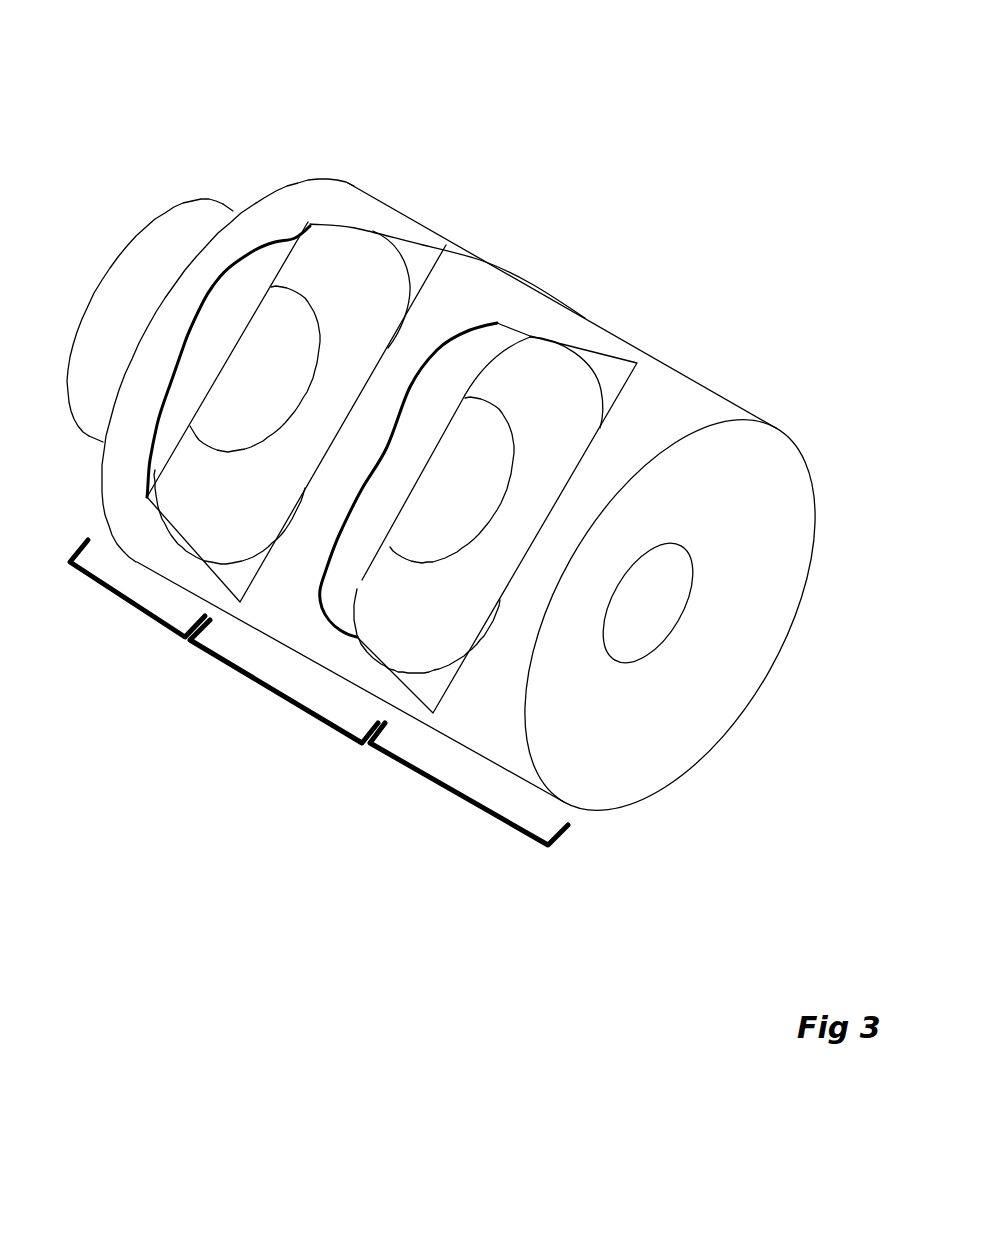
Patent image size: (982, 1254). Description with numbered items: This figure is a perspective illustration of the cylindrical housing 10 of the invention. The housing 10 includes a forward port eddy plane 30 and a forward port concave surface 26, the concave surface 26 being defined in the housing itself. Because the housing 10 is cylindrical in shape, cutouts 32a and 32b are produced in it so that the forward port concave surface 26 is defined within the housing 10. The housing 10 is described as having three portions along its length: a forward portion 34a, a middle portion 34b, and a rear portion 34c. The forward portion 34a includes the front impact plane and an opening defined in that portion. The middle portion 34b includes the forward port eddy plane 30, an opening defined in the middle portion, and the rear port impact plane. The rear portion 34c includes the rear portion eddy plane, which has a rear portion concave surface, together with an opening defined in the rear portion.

The housing 10 is at (665, 395).
The forward port concave surface 26 is at (423, 437).
The forward port eddy plane 30 is at (607, 367).
The cutout 32a is at (430, 353).
The cutout 32b is at (330, 513).
The forward portion 34a is at (455, 797).
The middle portion 34b is at (270, 688).
The rear portion 34c is at (127, 600).